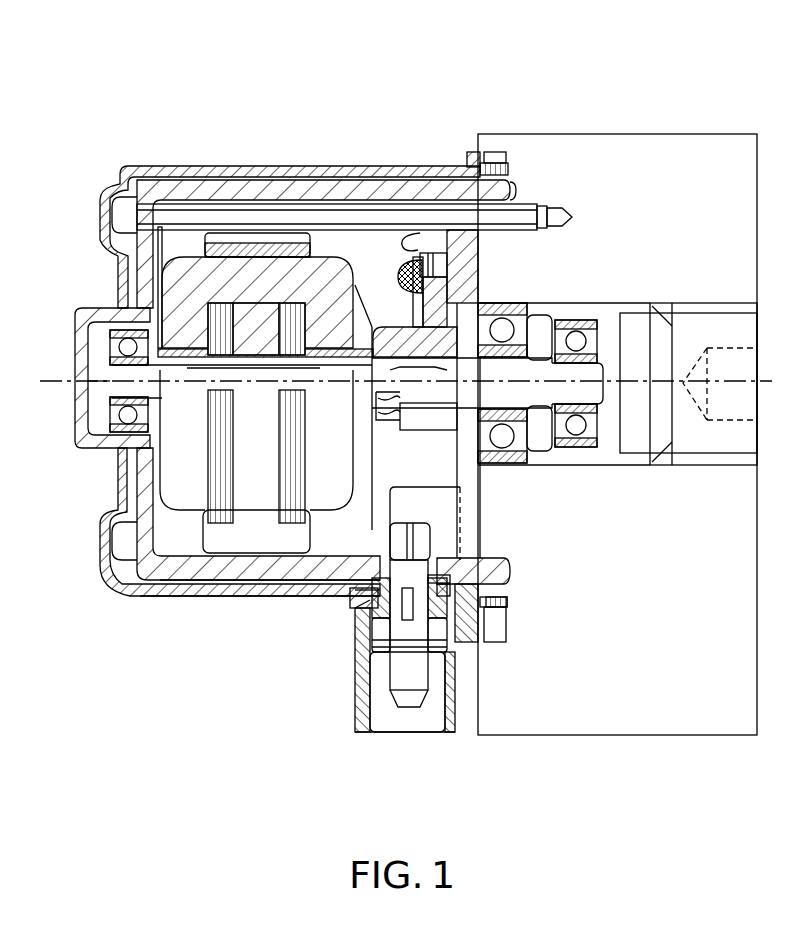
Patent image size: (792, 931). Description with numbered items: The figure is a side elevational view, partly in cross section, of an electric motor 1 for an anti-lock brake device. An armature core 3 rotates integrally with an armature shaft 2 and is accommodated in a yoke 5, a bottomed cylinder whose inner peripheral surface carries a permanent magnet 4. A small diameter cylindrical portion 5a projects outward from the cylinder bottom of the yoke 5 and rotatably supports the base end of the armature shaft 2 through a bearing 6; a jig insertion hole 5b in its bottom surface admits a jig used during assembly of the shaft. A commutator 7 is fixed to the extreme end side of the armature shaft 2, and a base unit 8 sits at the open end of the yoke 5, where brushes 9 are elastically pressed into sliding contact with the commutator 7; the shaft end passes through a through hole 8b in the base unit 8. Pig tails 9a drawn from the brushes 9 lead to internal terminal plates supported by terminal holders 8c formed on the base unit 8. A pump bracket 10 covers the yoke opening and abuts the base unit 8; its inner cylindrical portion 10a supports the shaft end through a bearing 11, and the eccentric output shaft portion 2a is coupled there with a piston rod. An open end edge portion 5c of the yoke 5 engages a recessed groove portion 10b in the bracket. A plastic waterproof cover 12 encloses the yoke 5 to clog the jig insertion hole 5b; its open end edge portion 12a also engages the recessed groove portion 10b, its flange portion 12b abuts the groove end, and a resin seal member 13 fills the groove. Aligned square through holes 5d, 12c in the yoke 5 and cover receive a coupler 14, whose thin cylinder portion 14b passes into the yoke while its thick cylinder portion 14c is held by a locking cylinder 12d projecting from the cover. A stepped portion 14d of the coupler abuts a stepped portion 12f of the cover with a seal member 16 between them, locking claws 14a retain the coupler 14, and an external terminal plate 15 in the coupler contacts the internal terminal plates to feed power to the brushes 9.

The electric motor 1 is at (396, 427).
The armature shaft 2 is at (548, 402).
The eccentric output shaft portion 2a is at (597, 402).
The armature core 3 is at (365, 287).
The permanent magnet 4 is at (225, 178).
The yoke 5 is at (287, 177).
The small diameter cylindrical portion 5a is at (118, 440).
The jig insertion hole 5b is at (78, 390).
The open end edge portion 5c is at (488, 176).
The through hole 5d is at (300, 588).
The bearing 6 is at (128, 345).
The commutator 7 is at (418, 422).
The base unit 8 is at (462, 240).
The through hole 8b is at (503, 328).
The terminal holder 8c is at (436, 497).
The brush 9 is at (450, 282).
The pig tail 9a is at (408, 258).
The pump bracket 10 is at (713, 150).
The inner cylindrical portion 10a is at (603, 327).
The recessed groove portion 10b is at (518, 190).
The bearing 11 is at (575, 320).
The waterproof cover 12 is at (150, 163).
The open end edge portion 12a is at (500, 162).
The flange portion 12b is at (470, 156).
The through hole 12c is at (335, 594).
The locking cylinder 12d is at (465, 646).
The stepped portion 12f is at (360, 598).
The seal member 13 is at (507, 160).
The coupler 14 is at (365, 742).
The locking claw 14a is at (385, 637).
The thin cylinder portion 14b is at (440, 557).
The thick cylinder portion 14c is at (375, 690).
The stepped portion 14d is at (372, 632).
The external terminal plate 15 is at (408, 674).
The seal member 16 is at (452, 560).